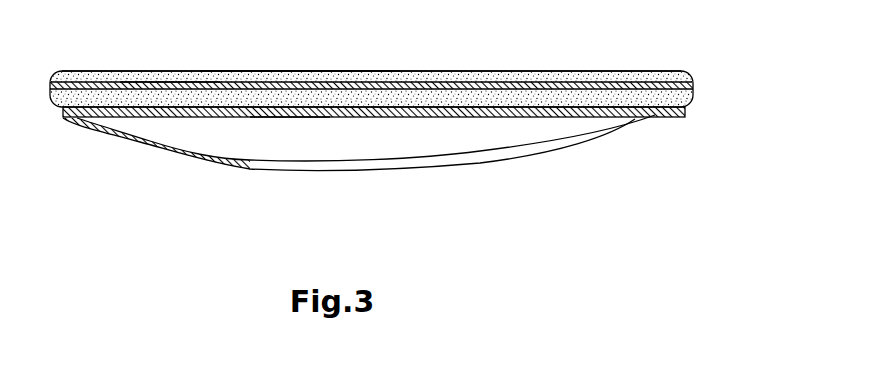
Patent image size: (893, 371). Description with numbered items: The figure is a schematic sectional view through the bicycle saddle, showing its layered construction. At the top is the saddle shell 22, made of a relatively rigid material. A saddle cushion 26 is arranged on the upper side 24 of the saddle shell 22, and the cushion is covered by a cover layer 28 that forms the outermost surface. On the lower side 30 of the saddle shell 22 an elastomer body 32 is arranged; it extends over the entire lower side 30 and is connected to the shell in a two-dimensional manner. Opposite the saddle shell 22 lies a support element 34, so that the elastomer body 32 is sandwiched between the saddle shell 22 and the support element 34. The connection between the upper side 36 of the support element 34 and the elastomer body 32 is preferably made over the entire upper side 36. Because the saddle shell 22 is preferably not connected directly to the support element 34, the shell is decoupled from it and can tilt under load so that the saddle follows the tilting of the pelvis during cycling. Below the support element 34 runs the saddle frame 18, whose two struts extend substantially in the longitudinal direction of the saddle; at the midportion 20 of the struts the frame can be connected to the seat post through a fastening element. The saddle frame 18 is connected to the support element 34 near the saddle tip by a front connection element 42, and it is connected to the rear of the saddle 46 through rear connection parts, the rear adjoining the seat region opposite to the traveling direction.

The saddle frame 18 is at (410, 124).
The midportion 20 is at (348, 180).
The saddle shell 22 is at (455, 82).
The upper side 24 is at (382, 86).
The saddle cushion 26 is at (290, 71).
The cover layer 28 is at (113, 71).
The lower side 30 is at (573, 90).
The elastomer body 32 is at (493, 110).
The support element 34 is at (288, 112).
The upper side 36 is at (170, 86).
The front connection element 42 is at (147, 142).
The rear of the saddle 46 is at (415, 106).